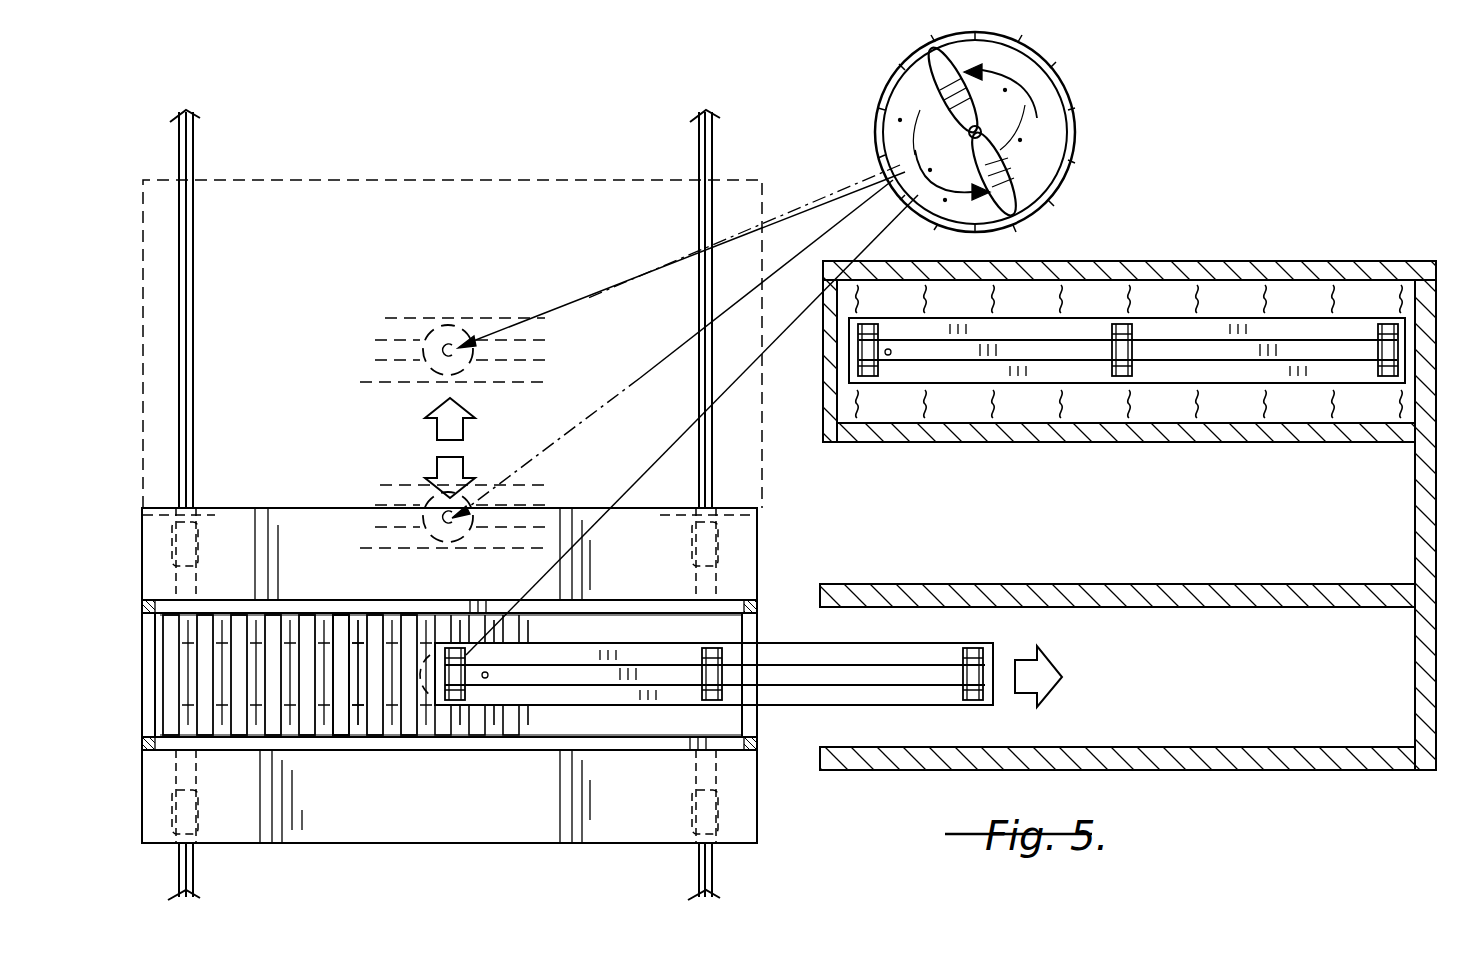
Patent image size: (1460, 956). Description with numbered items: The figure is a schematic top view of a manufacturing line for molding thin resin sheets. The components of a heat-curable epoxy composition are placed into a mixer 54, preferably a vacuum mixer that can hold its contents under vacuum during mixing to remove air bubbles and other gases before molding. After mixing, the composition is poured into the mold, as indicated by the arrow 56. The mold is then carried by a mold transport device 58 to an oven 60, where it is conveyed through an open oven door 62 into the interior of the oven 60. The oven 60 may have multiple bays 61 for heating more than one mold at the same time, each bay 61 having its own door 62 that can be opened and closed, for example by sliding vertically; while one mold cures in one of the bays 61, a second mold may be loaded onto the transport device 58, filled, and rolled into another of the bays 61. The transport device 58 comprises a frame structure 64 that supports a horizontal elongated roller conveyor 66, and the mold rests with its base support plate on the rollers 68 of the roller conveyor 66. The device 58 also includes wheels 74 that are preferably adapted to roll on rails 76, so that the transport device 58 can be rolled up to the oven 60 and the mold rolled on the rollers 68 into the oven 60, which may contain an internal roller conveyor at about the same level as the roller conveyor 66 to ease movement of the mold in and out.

The mixer 54 is at (1068, 70).
The arrow 56 is at (640, 476).
The mold transport device 58 is at (318, 580).
The oven 60 is at (1109, 473).
The bays 61 is at (1296, 300).
The oven door 62 is at (832, 406).
The frame structure 64 is at (214, 598).
The roller conveyor 66 is at (342, 602).
The rollers 68 is at (346, 636).
The wheels 74 is at (192, 830).
The rails 76 is at (194, 156).